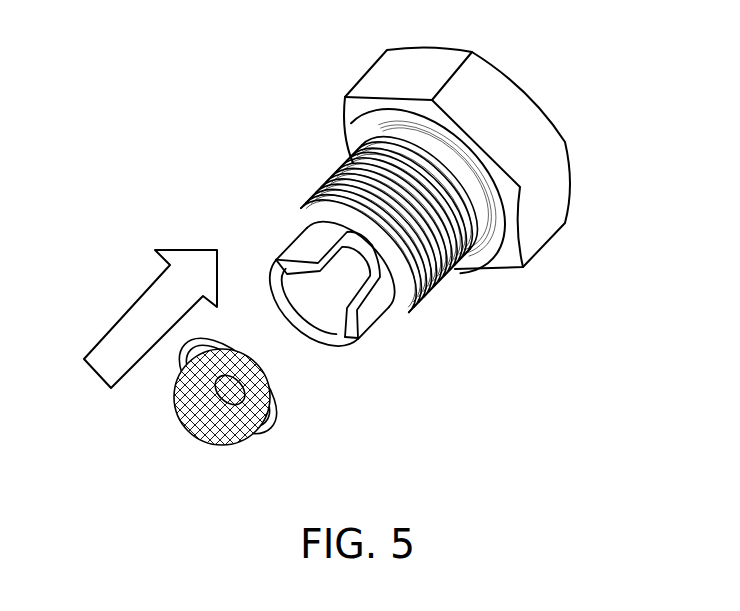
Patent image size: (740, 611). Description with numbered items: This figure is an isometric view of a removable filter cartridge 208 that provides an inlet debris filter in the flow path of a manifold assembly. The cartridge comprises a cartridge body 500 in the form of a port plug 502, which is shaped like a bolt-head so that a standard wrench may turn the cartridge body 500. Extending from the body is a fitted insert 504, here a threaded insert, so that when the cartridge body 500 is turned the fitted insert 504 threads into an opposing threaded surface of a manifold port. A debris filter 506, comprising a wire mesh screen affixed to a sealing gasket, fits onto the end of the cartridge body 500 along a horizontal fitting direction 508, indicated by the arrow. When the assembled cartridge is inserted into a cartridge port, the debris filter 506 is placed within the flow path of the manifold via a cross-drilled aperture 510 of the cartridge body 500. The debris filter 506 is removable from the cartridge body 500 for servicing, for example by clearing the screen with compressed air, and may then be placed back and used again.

The filter cartridge 208 is at (213, 79).
The cartridge body 500 is at (549, 130).
The port plug 502 is at (545, 232).
The fitted insert 504 is at (448, 270).
The debris filter 506 is at (222, 447).
The horizontal fitting direction 508 is at (155, 282).
The cross-drilled aperture 510 is at (318, 310).